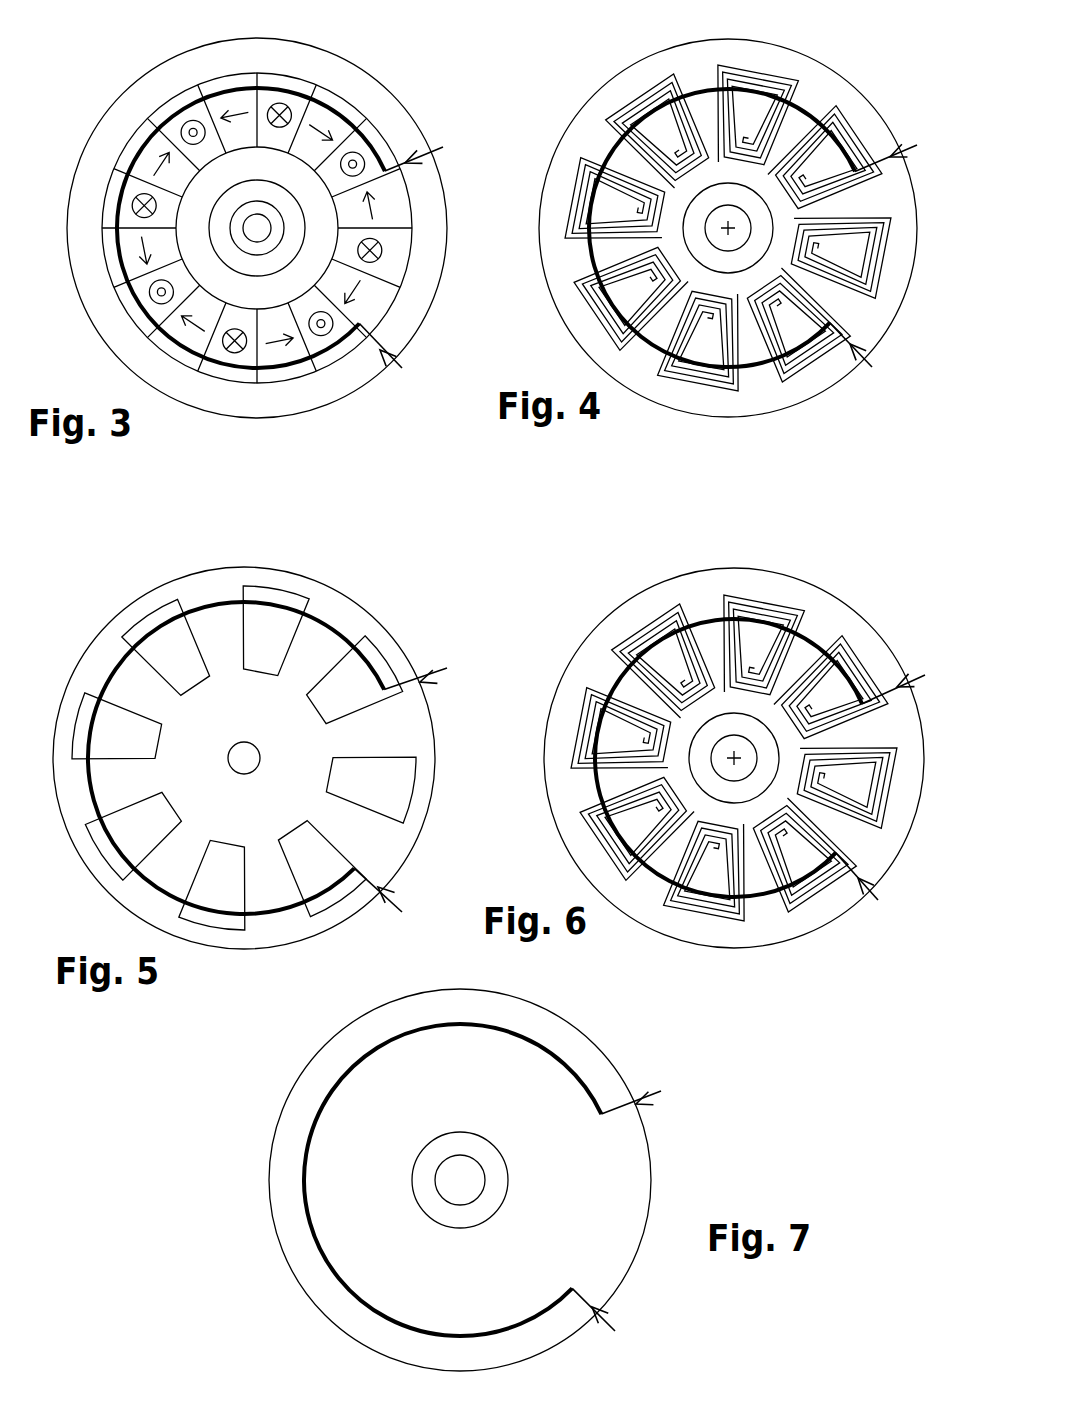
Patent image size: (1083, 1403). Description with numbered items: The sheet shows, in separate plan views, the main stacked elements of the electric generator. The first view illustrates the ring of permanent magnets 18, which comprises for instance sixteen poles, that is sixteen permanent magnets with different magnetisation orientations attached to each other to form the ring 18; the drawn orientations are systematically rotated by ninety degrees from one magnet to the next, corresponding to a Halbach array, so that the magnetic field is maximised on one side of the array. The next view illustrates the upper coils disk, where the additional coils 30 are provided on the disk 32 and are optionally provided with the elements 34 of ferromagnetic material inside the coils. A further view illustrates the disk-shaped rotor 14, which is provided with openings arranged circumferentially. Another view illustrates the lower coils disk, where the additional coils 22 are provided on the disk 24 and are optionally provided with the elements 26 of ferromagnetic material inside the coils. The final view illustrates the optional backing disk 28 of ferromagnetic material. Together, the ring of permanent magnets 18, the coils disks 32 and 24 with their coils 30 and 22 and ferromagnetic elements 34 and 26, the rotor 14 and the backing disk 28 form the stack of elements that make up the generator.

In FIG. 5, the disk-shaped rotor 14 is at (132, 602).
In FIG. 3, the ring of permanent magnets 18 is at (117, 202).
In FIG. 6, the additional coils 22 is at (865, 668).
In FIG. 6, the disk 24 is at (778, 943).
In FIG. 6, the elements of ferromagnetic material 26 is at (800, 850).
In FIG. 7, the backing disk 28 is at (269, 1171).
In FIG. 4, the additional coils 30 is at (845, 128).
In FIG. 4, the disk 32 is at (748, 416).
In FIG. 4, the elements of ferromagnetic material 34 is at (793, 327).